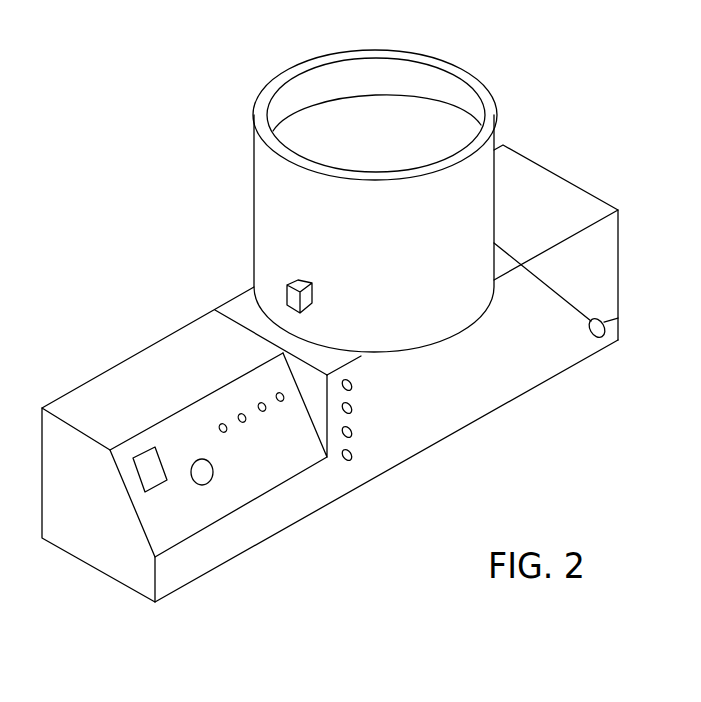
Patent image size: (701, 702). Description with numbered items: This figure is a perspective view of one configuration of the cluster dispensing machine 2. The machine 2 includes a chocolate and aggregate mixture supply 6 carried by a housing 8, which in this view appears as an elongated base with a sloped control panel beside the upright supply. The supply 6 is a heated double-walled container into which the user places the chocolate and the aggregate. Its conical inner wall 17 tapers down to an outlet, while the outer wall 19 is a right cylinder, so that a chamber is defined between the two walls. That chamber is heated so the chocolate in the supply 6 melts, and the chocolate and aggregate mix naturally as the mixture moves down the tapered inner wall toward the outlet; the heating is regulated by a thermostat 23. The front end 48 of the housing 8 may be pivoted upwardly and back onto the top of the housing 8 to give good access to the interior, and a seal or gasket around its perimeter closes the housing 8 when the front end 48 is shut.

The cluster dispensing machine 2 is at (331, 325).
The chocolate and aggregate mixture supply 6 is at (347, 200).
The housing 8 is at (80, 399).
The conical inner wall 17 is at (440, 114).
The outer wall 19 is at (250, 178).
The thermostat 23 is at (303, 280).
The front end 48 is at (598, 208).